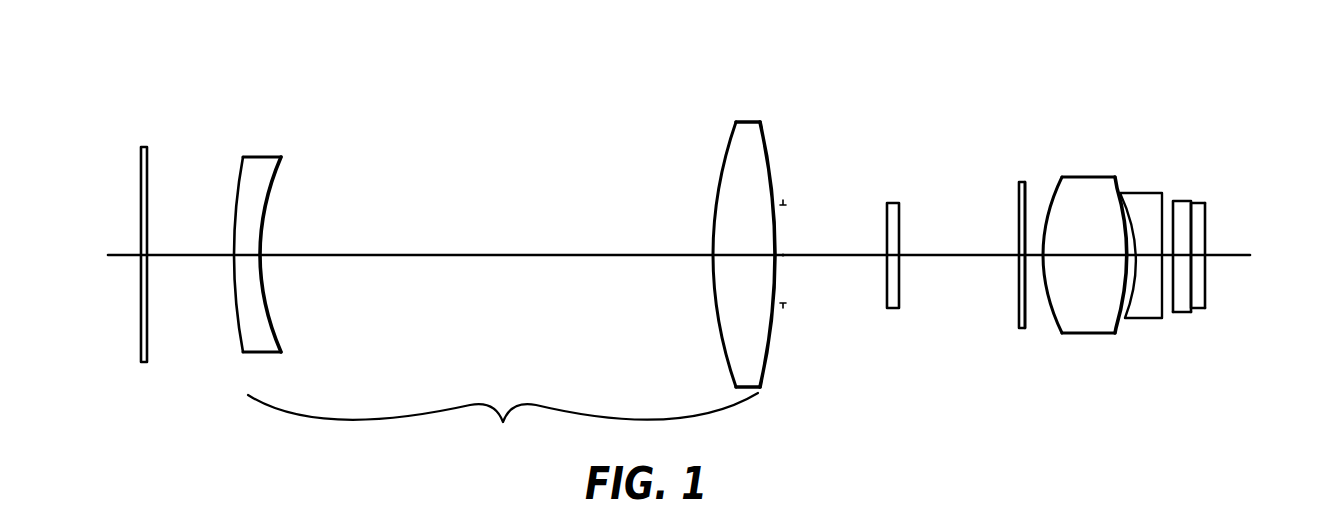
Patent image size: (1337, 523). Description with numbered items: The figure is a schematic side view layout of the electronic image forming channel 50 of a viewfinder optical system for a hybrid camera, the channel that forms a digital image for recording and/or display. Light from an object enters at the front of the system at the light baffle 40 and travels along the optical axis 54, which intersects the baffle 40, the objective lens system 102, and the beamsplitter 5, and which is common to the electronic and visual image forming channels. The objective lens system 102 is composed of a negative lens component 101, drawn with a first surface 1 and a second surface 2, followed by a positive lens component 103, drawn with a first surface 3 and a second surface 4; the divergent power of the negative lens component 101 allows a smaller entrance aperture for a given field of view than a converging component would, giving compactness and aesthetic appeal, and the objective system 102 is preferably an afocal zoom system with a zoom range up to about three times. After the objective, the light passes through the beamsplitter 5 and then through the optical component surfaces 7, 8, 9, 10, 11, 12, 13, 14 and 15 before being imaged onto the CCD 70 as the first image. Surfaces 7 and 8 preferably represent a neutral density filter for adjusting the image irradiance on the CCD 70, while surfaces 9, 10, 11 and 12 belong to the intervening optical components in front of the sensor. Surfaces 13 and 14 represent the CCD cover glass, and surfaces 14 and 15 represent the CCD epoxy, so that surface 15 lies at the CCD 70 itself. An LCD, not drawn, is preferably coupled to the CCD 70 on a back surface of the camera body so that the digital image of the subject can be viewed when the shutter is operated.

The first surface of lens 101 1 is at (238, 187).
The second surface of lens 101 2 is at (276, 179).
The first surface of lens 103 3 is at (727, 150).
The second surface of lens 103 4 is at (767, 150).
The beamsplitter 5 is at (888, 202).
The optical component surface 7 is at (1019, 214).
The optical component surface 8 is at (1027, 196).
The optical component surface 9 is at (1046, 205).
The optical component surface 10 is at (1118, 190).
The optical component surface 11 is at (1124, 215).
The optical component surface 12 is at (1174, 202).
The optical component surface 13 is at (1172, 292).
The optical component surface 14 is at (1197, 217).
The optical component surface 15 is at (1207, 242).
The light baffle 40 is at (140, 347).
The electronic image forming channel 50 is at (1152, 92).
The optical axis 54 is at (125, 257).
The CCD 70 is at (1196, 228).
The negative lens component 101 is at (245, 270).
The objective lens system 102 is at (501, 284).
The positive lens component 103 is at (759, 264).